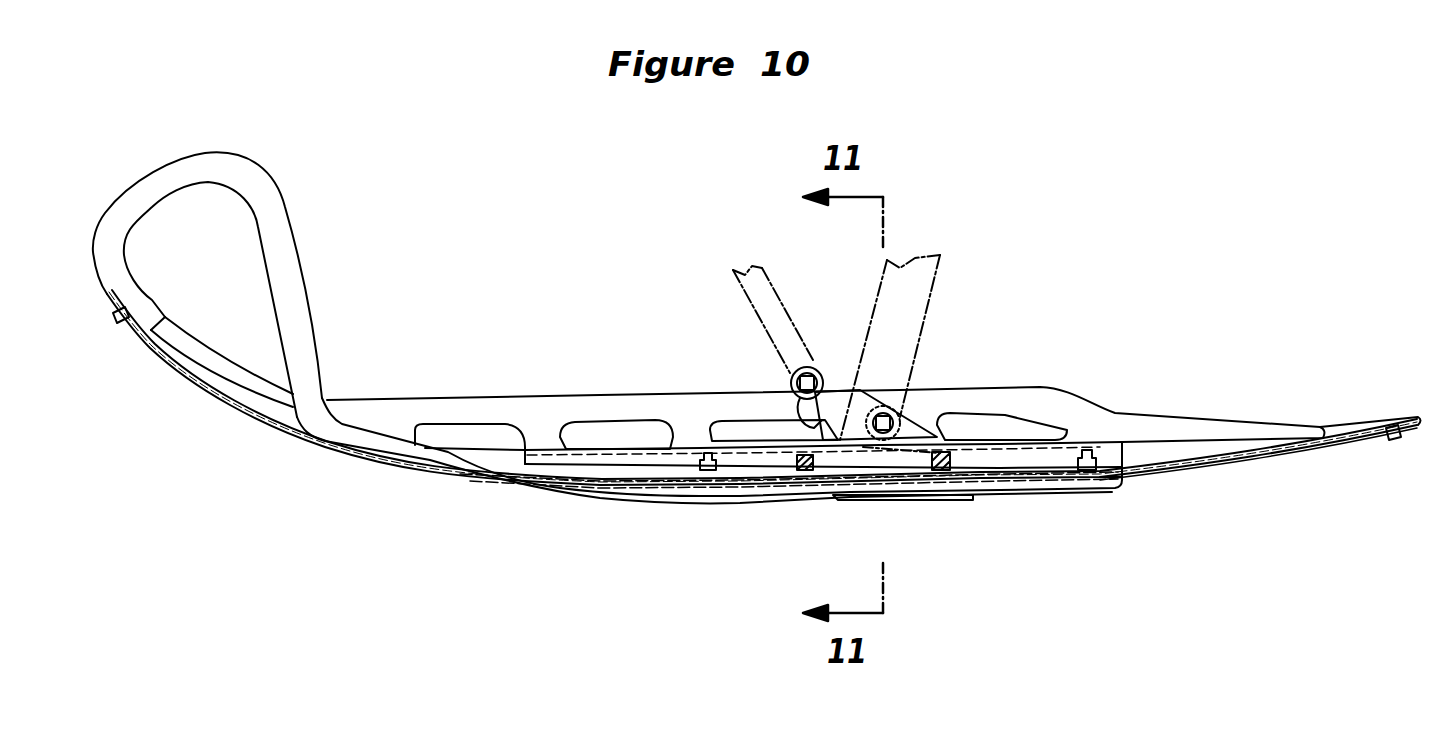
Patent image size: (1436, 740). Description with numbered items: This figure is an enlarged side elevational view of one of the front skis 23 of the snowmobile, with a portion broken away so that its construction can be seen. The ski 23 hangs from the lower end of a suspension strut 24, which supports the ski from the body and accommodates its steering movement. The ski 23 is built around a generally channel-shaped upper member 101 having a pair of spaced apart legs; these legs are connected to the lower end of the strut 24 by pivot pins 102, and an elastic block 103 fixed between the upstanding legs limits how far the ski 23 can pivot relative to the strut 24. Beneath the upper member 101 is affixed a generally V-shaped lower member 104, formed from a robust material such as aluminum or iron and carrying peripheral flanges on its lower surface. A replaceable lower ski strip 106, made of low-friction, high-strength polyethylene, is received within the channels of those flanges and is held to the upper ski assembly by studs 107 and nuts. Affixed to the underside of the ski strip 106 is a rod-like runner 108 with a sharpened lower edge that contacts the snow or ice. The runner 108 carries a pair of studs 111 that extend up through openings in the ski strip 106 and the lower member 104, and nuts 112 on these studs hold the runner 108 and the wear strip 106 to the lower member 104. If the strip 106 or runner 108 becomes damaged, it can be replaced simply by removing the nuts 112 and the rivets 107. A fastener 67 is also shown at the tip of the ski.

The front ski 23 is at (350, 390).
The suspension strut 24 is at (856, 343).
The tip fastener 67 is at (122, 322).
The upper member 101 is at (505, 405).
The pivot pin 102 is at (885, 418).
The elastic block 103 is at (733, 430).
The lower member 104 is at (1263, 440).
The replaceable lower ski strip 106 is at (1295, 462).
The stud 107 is at (1397, 445).
The runner 108 is at (1077, 487).
The stud 111 is at (707, 458).
The nut 112 is at (660, 450).